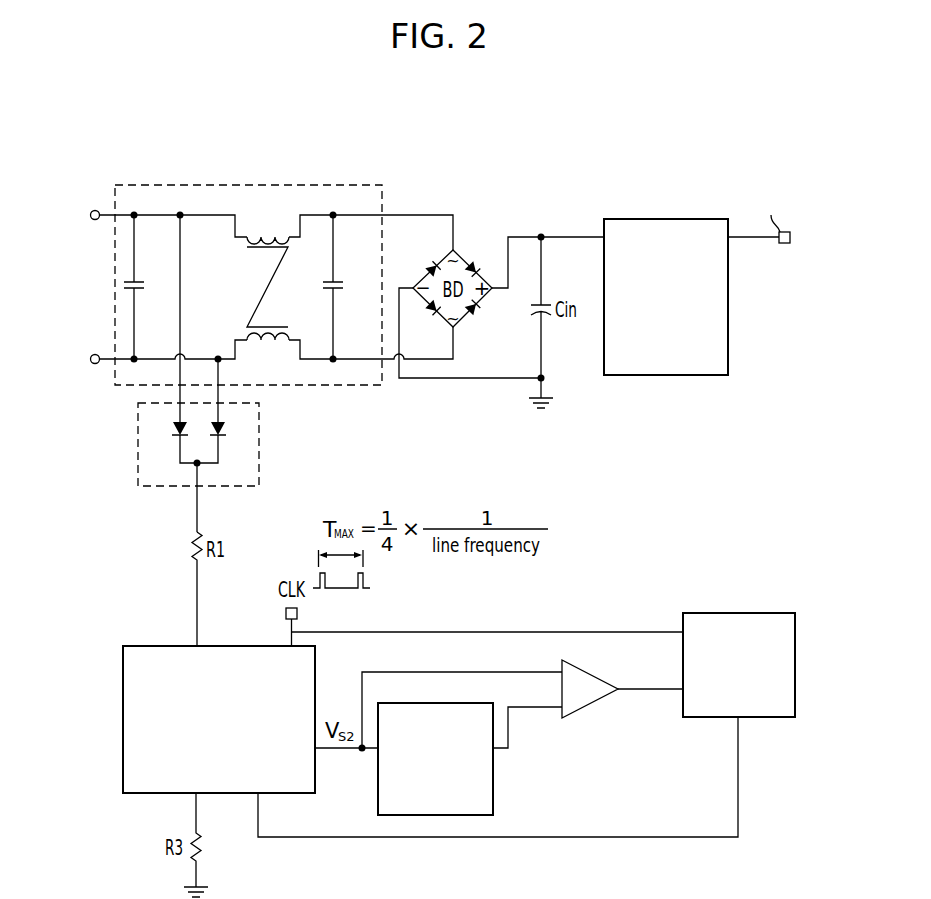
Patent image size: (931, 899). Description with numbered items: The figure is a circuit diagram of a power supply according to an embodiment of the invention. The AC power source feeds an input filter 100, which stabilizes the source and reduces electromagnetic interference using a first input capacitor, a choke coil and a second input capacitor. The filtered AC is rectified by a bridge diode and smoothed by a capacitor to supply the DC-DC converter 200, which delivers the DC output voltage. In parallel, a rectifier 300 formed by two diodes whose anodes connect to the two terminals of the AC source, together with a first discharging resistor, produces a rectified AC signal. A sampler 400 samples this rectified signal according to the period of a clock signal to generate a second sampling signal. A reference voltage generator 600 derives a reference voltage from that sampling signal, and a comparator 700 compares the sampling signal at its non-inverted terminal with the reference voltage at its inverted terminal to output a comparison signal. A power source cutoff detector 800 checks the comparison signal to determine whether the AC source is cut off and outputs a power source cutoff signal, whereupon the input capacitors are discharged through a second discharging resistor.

The input filter 100 is at (216, 185).
The DC-DC converter 200 is at (676, 219).
The rectifier 300 is at (259, 443).
The sampler 400 is at (142, 646).
The reference voltage generator 600 is at (493, 779).
The comparator 700 is at (586, 668).
The power source cutoff detector 800 is at (733, 613).